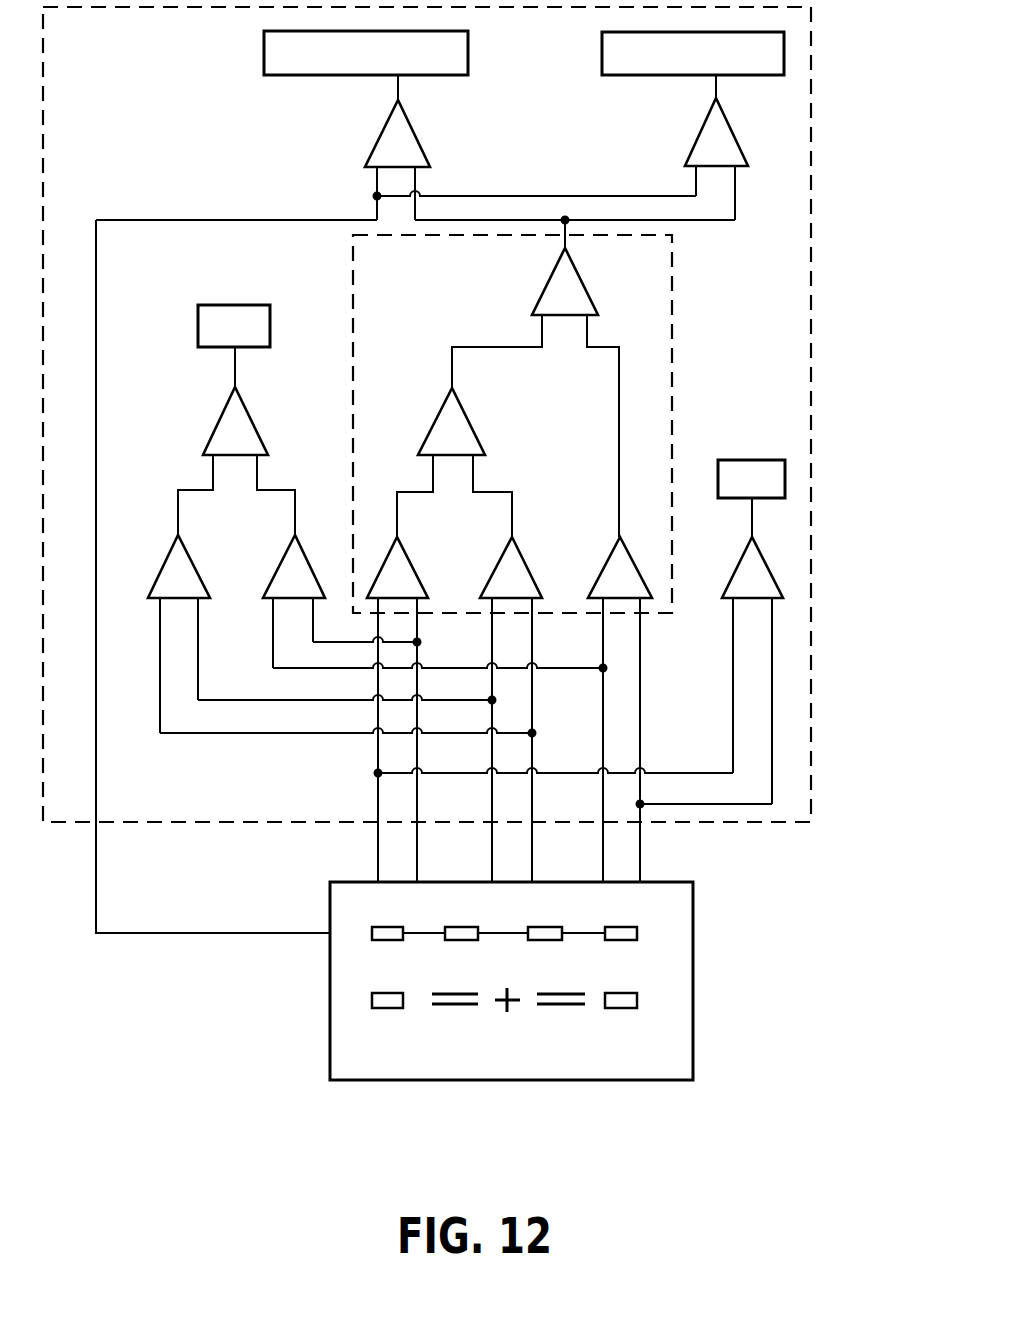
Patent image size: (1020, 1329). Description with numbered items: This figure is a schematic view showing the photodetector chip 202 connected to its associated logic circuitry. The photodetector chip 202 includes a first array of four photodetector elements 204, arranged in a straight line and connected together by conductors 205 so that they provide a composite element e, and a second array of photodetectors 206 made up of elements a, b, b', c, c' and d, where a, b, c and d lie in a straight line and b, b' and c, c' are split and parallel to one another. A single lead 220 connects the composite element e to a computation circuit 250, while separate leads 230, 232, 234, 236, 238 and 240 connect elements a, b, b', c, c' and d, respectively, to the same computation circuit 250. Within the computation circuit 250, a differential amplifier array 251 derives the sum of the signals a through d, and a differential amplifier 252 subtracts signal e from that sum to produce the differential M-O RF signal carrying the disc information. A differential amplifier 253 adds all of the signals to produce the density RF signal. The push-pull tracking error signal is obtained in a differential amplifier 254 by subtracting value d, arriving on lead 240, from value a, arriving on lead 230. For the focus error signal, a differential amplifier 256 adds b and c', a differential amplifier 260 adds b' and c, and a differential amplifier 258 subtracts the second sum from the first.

The photodetector chip 202 is at (557, 981).
The photodetector elements 204 is at (455, 927).
The conductors 205 is at (429, 938).
The second array of photodetectors 206 is at (618, 1012).
The lead 220 is at (250, 936).
The lead 230 is at (378, 849).
The lead 232 is at (417, 862).
The lead 234 is at (492, 860).
The lead 236 is at (532, 860).
The lead 238 is at (640, 856).
The lead 240 is at (640, 880).
The computation circuit 250 is at (812, 160).
The differential amplifier array 251 is at (672, 347).
The differential amplifier 252 is at (414, 126).
The differential amplifier 253 is at (702, 128).
The differential amplifier 254 is at (738, 565).
The differential amplifier 256 is at (279, 565).
The differential amplifier 258 is at (222, 422).
The differential amplifier 260 is at (164, 565).